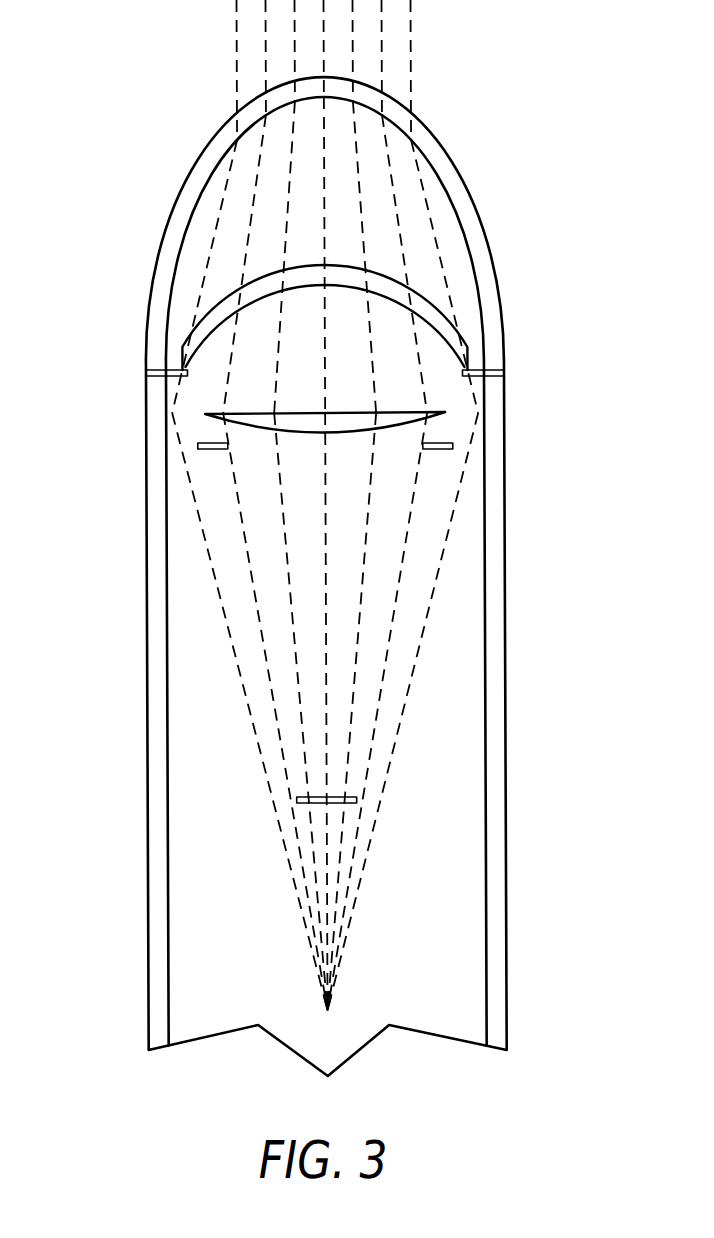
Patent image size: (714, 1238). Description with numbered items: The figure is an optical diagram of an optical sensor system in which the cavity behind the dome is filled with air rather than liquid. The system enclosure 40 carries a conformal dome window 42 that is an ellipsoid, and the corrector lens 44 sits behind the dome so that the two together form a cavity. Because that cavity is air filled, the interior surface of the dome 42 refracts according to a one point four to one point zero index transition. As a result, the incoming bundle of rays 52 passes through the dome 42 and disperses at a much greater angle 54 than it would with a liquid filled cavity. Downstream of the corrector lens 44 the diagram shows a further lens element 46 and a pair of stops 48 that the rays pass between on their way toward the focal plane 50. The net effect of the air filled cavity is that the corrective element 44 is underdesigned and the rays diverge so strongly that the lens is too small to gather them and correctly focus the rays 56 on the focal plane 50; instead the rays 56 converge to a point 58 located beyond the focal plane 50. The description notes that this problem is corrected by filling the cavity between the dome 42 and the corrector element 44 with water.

The system enclosure 40 is at (502, 882).
The conformal dome window 42 is at (448, 157).
The corrector lens 44 is at (420, 292).
The third lens 46 is at (417, 409).
The aperture stops 48 is at (210, 450).
The focal plane 50 is at (332, 796).
The bundle of rays 52 is at (222, 44).
The dispersion angle 54 is at (195, 235).
The rays 56 is at (231, 721).
The focus point 58 is at (295, 1008).